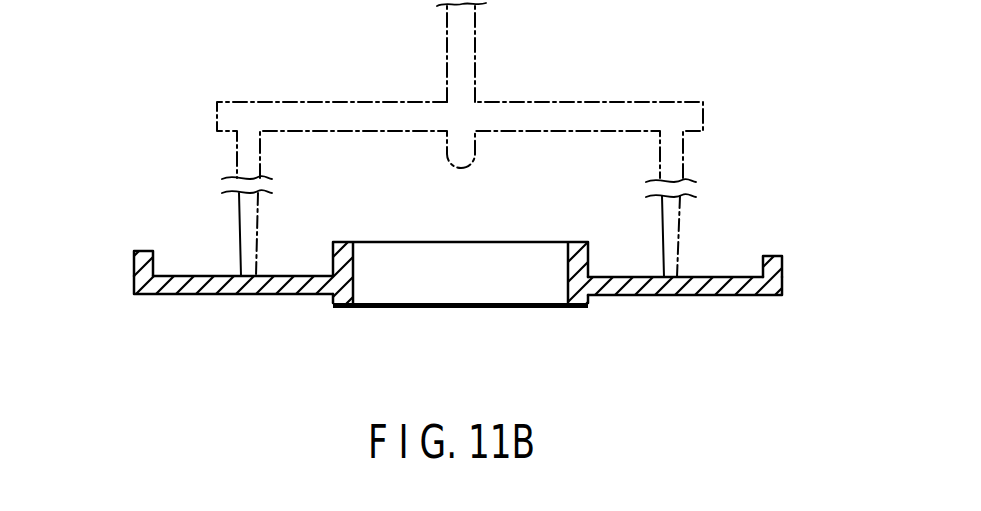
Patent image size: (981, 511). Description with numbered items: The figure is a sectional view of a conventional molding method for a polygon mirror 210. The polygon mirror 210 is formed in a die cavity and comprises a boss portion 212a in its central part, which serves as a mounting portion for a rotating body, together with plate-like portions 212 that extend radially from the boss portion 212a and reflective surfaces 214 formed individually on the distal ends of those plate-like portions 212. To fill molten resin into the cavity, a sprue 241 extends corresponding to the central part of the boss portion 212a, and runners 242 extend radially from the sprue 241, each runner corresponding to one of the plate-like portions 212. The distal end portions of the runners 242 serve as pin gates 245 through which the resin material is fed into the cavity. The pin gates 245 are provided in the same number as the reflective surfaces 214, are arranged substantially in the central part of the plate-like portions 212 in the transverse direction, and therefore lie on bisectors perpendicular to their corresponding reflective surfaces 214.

The polygon mirror 210 is at (494, 230).
The plate-like portions 212 is at (639, 298).
The boss portion 212a is at (573, 310).
The reflective surfaces 214 is at (821, 279).
The sprue 241 is at (468, 78).
The runners 242 is at (284, 110).
The pin gates 245 is at (675, 277).